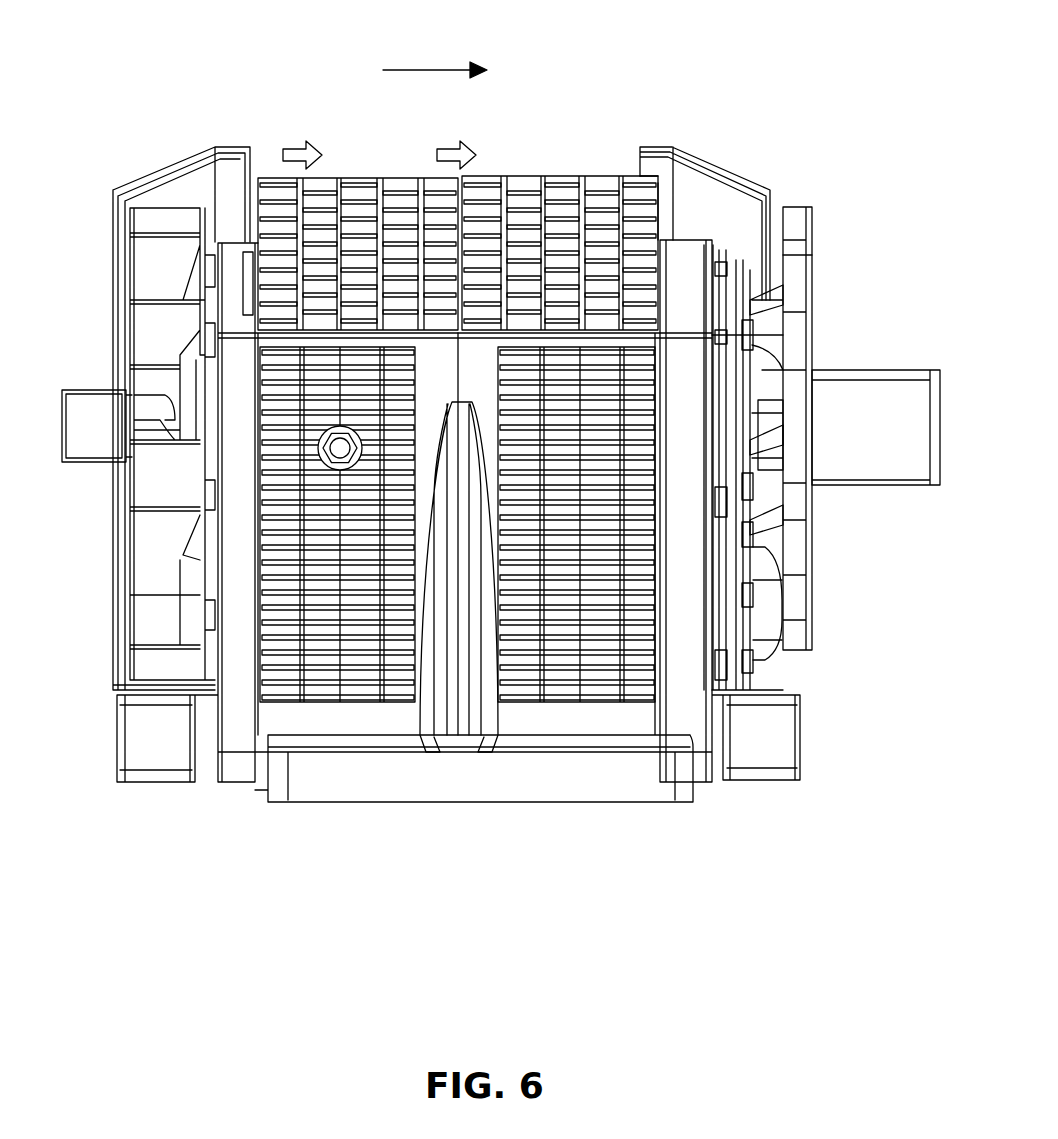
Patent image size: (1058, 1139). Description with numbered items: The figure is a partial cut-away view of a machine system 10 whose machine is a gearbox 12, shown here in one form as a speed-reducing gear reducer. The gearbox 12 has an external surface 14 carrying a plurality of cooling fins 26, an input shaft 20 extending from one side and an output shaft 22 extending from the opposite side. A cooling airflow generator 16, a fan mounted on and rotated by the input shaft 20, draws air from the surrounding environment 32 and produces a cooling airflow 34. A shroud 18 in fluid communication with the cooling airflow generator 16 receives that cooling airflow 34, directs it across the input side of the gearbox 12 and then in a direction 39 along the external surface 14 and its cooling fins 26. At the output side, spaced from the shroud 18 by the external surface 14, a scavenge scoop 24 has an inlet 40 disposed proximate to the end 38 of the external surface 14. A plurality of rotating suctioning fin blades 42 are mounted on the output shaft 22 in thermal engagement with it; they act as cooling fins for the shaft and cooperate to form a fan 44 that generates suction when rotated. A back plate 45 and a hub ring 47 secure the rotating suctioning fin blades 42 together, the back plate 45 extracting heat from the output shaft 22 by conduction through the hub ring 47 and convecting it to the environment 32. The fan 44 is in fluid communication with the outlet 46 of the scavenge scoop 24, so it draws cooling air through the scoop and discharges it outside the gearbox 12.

The machine system 10 is at (760, 45).
The gearbox 12 is at (234, 785).
The external surface 14 is at (452, 357).
The cooling airflow generator 16 is at (171, 567).
The shroud 18 is at (150, 173).
The input shaft 20 is at (82, 462).
The output shaft 22 is at (882, 485).
The scavenge scoop 24 is at (735, 177).
The cooling fins 26 is at (518, 176).
The environment 32 is at (545, 42).
The cooling airflow 34 is at (300, 143).
The end 38 is at (662, 185).
The direction 39 is at (452, 70).
The inlet 40 is at (632, 168).
The rotating suctioning fin blades 42 is at (796, 207).
The fan 44 is at (866, 213).
The back plate 45 is at (817, 250).
The outlet 46 is at (790, 300).
The hub ring 47 is at (788, 410).